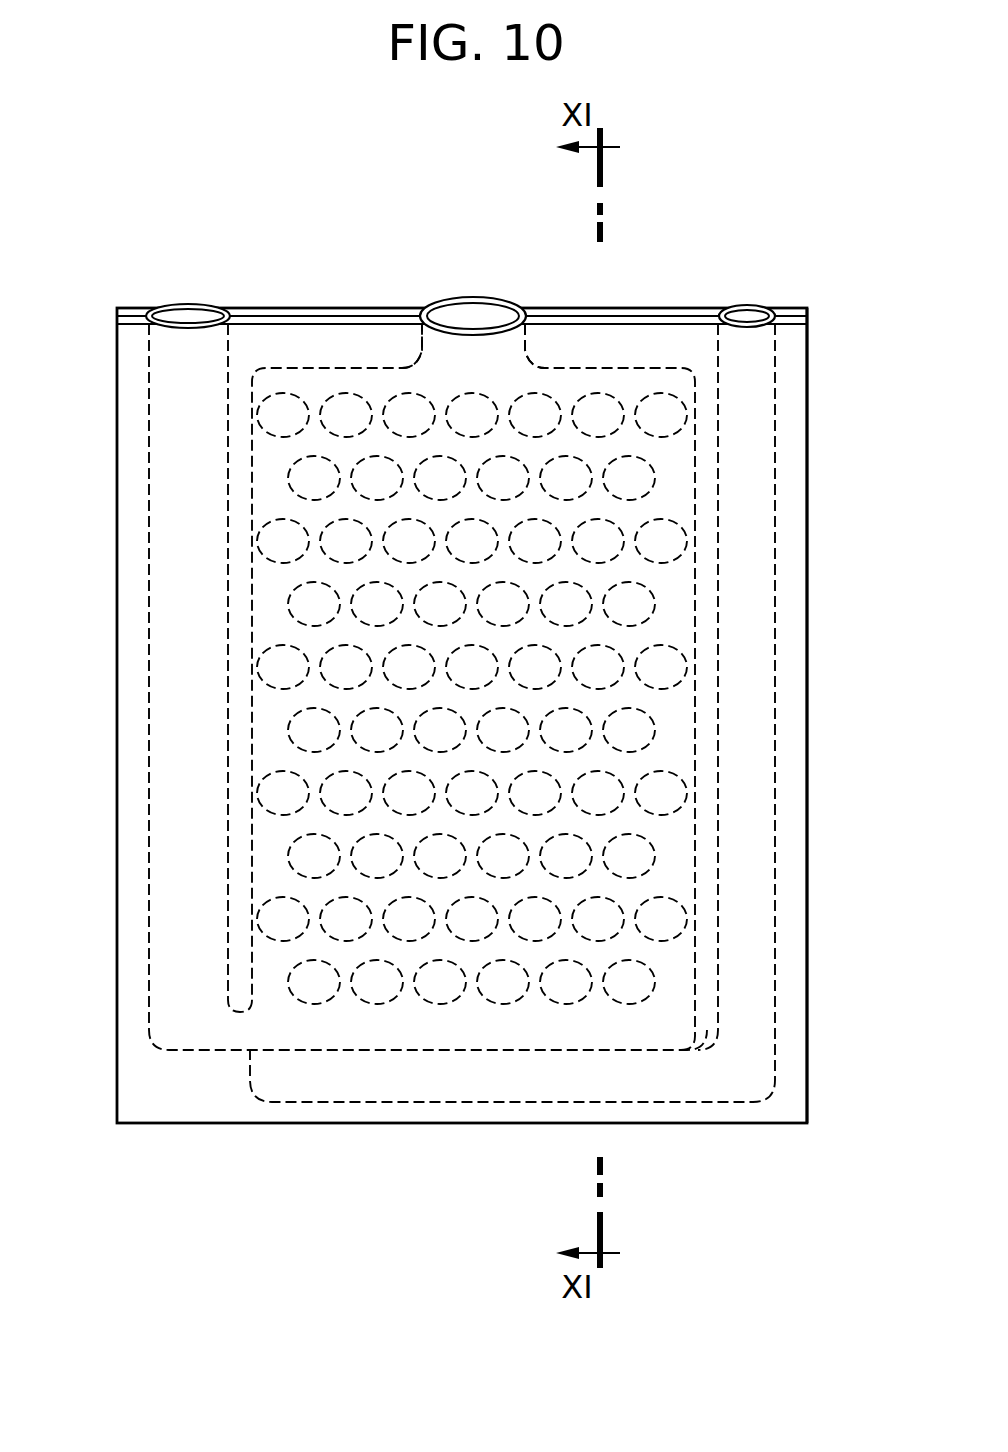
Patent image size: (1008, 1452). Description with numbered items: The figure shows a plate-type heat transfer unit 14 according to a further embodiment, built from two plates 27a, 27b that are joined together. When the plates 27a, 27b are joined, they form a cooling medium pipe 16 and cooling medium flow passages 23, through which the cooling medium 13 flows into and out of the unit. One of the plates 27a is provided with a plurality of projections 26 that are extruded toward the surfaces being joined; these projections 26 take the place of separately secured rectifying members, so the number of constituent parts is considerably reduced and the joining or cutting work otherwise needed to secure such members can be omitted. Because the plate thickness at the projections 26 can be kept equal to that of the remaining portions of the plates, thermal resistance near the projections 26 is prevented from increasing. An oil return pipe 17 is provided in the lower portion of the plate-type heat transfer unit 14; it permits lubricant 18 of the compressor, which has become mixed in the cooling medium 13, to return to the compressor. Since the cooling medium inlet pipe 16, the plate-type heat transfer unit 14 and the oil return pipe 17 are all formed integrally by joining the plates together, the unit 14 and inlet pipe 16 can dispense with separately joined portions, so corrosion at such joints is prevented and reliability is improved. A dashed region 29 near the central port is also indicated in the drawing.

The cooling medium 13 is at (188, 192).
The plate-type heat transfer unit 14 is at (130, 917).
The cooling medium pipe 16 is at (169, 453).
The oil return pipe 17 is at (753, 515).
The lubricant 18 is at (746, 290).
The cooling medium flow passages 23 is at (278, 873).
The projections 26 is at (297, 603).
The plate 27a is at (790, 373).
The plate 27b is at (663, 308).
The communication neck 29 is at (430, 348).